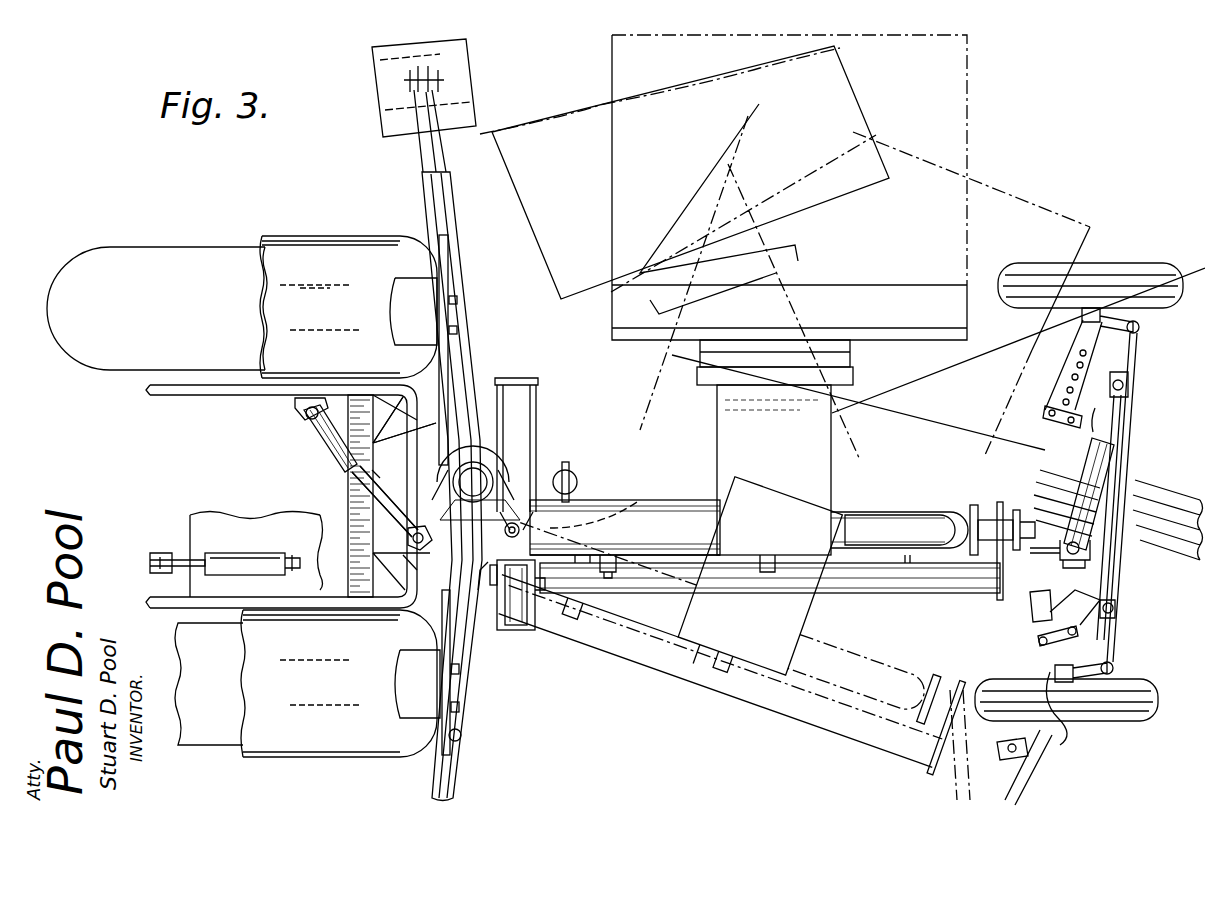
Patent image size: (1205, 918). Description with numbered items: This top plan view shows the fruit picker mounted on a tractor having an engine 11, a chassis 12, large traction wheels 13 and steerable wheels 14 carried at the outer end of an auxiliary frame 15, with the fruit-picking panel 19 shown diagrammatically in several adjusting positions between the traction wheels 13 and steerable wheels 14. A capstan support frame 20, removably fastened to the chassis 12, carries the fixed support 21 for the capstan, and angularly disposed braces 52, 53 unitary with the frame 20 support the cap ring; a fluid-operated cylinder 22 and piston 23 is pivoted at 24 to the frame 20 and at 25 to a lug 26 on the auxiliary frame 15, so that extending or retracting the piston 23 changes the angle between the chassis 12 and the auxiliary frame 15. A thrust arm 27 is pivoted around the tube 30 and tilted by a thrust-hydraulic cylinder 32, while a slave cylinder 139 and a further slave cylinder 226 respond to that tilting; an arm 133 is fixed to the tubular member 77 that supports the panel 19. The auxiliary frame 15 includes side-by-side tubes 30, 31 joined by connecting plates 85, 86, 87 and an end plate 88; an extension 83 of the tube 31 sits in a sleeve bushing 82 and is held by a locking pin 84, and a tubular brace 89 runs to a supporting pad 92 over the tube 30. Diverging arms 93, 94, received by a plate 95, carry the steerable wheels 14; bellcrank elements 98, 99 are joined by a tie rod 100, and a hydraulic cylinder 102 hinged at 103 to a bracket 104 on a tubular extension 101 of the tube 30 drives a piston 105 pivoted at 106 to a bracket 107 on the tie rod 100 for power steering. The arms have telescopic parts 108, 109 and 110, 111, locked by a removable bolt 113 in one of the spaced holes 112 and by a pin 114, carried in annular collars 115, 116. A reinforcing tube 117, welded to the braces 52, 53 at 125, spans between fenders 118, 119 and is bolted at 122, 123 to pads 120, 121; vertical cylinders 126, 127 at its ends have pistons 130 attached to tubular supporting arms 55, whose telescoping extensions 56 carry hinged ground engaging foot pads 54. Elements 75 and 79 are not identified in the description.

The engine 11 is at (547, 462).
The chassis 12 is at (545, 515).
The large traction wheels 13 is at (165, 250).
The steerable wheels 14 is at (1128, 270).
The auxiliary frame 15 is at (944, 606).
The fruit-picking panel 19 is at (605, 331).
The capstan support frame 20 is at (422, 592).
The fixed support 21 is at (494, 458).
The fluid-operated cylinder 22 is at (324, 440).
The piston 23 is at (372, 500).
The pivot 24 is at (300, 418).
The pivotal attachment 25 is at (412, 540).
The lug 26 is at (430, 533).
The thrust arm 27 is at (620, 512).
The tubular member 30 is at (878, 518).
The tubular member 31 is at (852, 592).
The thrust-hydraulic cylinder 32 is at (514, 618).
The angularly disposed brace 52 is at (480, 522).
The angularly disposed brace 53 is at (466, 438).
The ground engaging foot pads 54 is at (455, 62).
The tubular supporting arms 55 is at (468, 283).
The telescoping extensions 56 is at (440, 152).
The tube 75 is at (683, 514).
The tubular member 77 is at (737, 570).
The plate 79 is at (555, 550).
The sleeve bushing 82 is at (490, 572).
The extension 83 is at (547, 596).
The locking pin 84 is at (496, 590).
The connecting plate 85 is at (583, 566).
The connecting plate 86 is at (770, 575).
The connecting plate 87 is at (907, 565).
The end plate 88 is at (998, 578).
The tubular brace 89 is at (890, 512).
The supporting pad 92 is at (962, 516).
The diverging arm 93 is at (1037, 425).
The diverging arm 94 is at (1031, 614).
The plate 95 is at (1115, 478).
The bellcrank element 98 is at (1140, 325).
The bellcrank element 99 is at (1115, 668).
The tie rod 100 is at (1134, 440).
The tubular extension 101 is at (1045, 547).
The hydraulic cylinder 102 is at (1094, 409).
The hinge 103 is at (1066, 544).
The bracket 104 is at (1059, 567).
The piston 105 is at (1122, 415).
The pivotal attachment 106 is at (1125, 385).
The bracket 107 is at (1129, 376).
The telescopic part 108 is at (1015, 448).
The telescopic part 109 is at (1068, 386).
The telescopic part 110 is at (1036, 643).
The telescopic part 111 is at (1068, 712).
The spaced holes 112 is at (1068, 390).
The removable bolt 113 is at (1048, 412).
The removable bolt or pin 114 is at (1090, 618).
The annular collar 115 is at (1062, 398).
The annular collar 116 is at (1040, 658).
The reinforcing tube 117 is at (444, 632).
The tractor fender 118 is at (328, 238).
The tractor fender 119 is at (298, 745).
The pad or plate member 120 is at (398, 305).
The pad or plate member 121 is at (415, 677).
The bolts 122 is at (458, 330).
The bolts 123 is at (460, 670).
The weld attachment 125 is at (436, 425).
The hydraulically operated cylinder 126 is at (450, 240).
The hydraulically operated cylinder 127 is at (461, 740).
The piston 130 is at (510, 520).
The arm 133 is at (518, 417).
The hydraulic cylinder 139 is at (614, 575).
The slave cylinder 226 is at (578, 476).